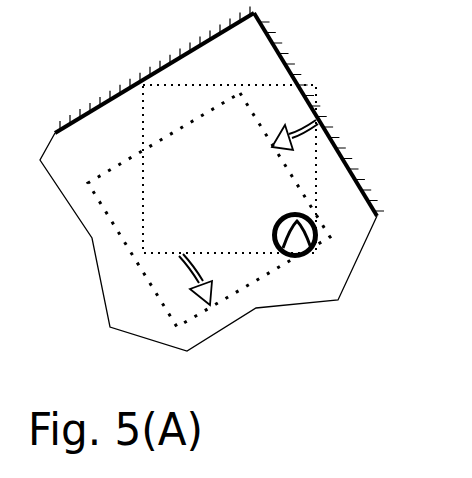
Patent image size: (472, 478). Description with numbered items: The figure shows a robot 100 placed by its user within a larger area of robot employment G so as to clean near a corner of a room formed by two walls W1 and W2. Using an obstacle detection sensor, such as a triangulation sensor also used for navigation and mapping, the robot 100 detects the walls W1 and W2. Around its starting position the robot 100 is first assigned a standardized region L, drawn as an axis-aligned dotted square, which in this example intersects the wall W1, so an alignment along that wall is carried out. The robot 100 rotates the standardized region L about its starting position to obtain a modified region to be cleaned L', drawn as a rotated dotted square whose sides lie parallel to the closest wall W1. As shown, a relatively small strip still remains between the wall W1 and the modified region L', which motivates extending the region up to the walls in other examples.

The wall W2 is at (96, 92).
The wall W1 is at (306, 72).
The area of robot employment G is at (344, 289).
The standardized region L is at (168, 169).
The modified region to be cleaned L' is at (175, 210).
The robot 100 is at (320, 235).